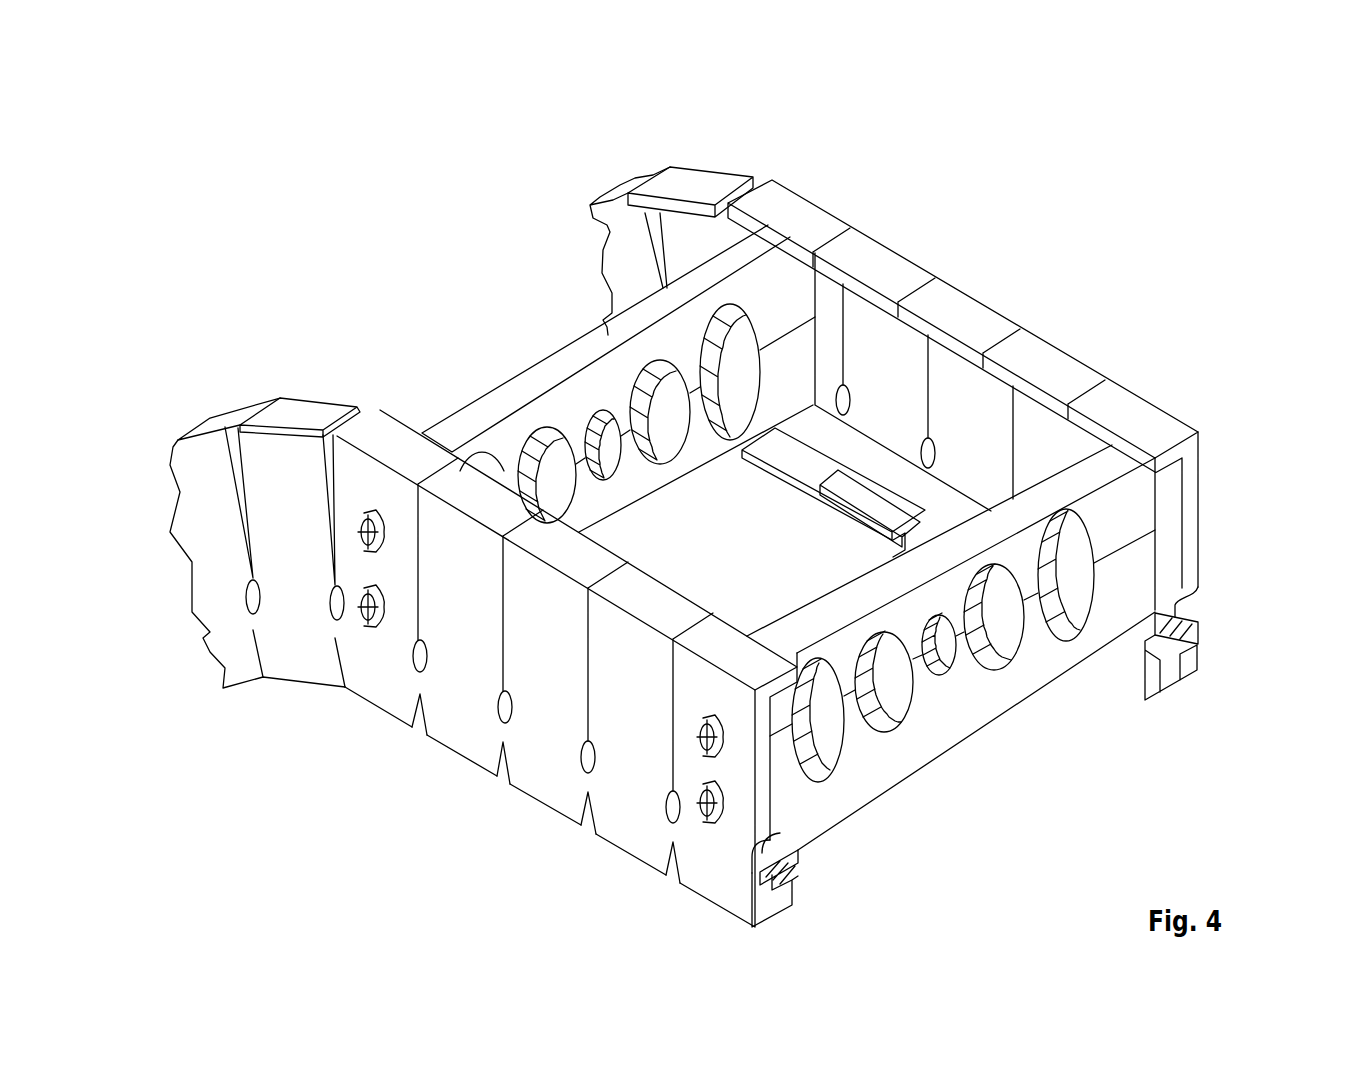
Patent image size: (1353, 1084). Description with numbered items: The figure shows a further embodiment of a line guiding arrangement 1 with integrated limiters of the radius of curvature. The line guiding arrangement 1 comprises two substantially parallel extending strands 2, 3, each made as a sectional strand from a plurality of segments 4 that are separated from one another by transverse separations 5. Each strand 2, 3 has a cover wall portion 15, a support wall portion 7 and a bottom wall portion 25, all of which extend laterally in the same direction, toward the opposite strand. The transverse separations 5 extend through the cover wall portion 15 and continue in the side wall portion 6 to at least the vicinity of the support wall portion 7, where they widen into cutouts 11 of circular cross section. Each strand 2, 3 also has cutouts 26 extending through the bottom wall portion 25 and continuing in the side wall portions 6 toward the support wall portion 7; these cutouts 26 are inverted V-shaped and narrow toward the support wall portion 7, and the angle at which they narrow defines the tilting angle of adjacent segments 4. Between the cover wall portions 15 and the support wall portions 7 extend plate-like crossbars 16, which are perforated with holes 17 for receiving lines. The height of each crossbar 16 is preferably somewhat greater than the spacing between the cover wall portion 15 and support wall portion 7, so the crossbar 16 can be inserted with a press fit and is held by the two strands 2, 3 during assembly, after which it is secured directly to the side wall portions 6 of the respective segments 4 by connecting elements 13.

The line guiding arrangement 1 is at (997, 209).
The strand 2 is at (1088, 360).
The strand 3 is at (300, 400).
The segment 4 is at (537, 635).
The transverse separation 5 is at (1001, 343).
The side wall portion 6 is at (1198, 530).
The support wall portion 7 is at (1197, 660).
The cutout 11 is at (587, 767).
The connecting element 13 is at (693, 807).
The cover wall portion 15 is at (1172, 458).
The crossbar 16 is at (580, 342).
The hole 17 is at (1008, 677).
The bottom wall portion 25 is at (1163, 683).
The cutout 26 is at (505, 778).